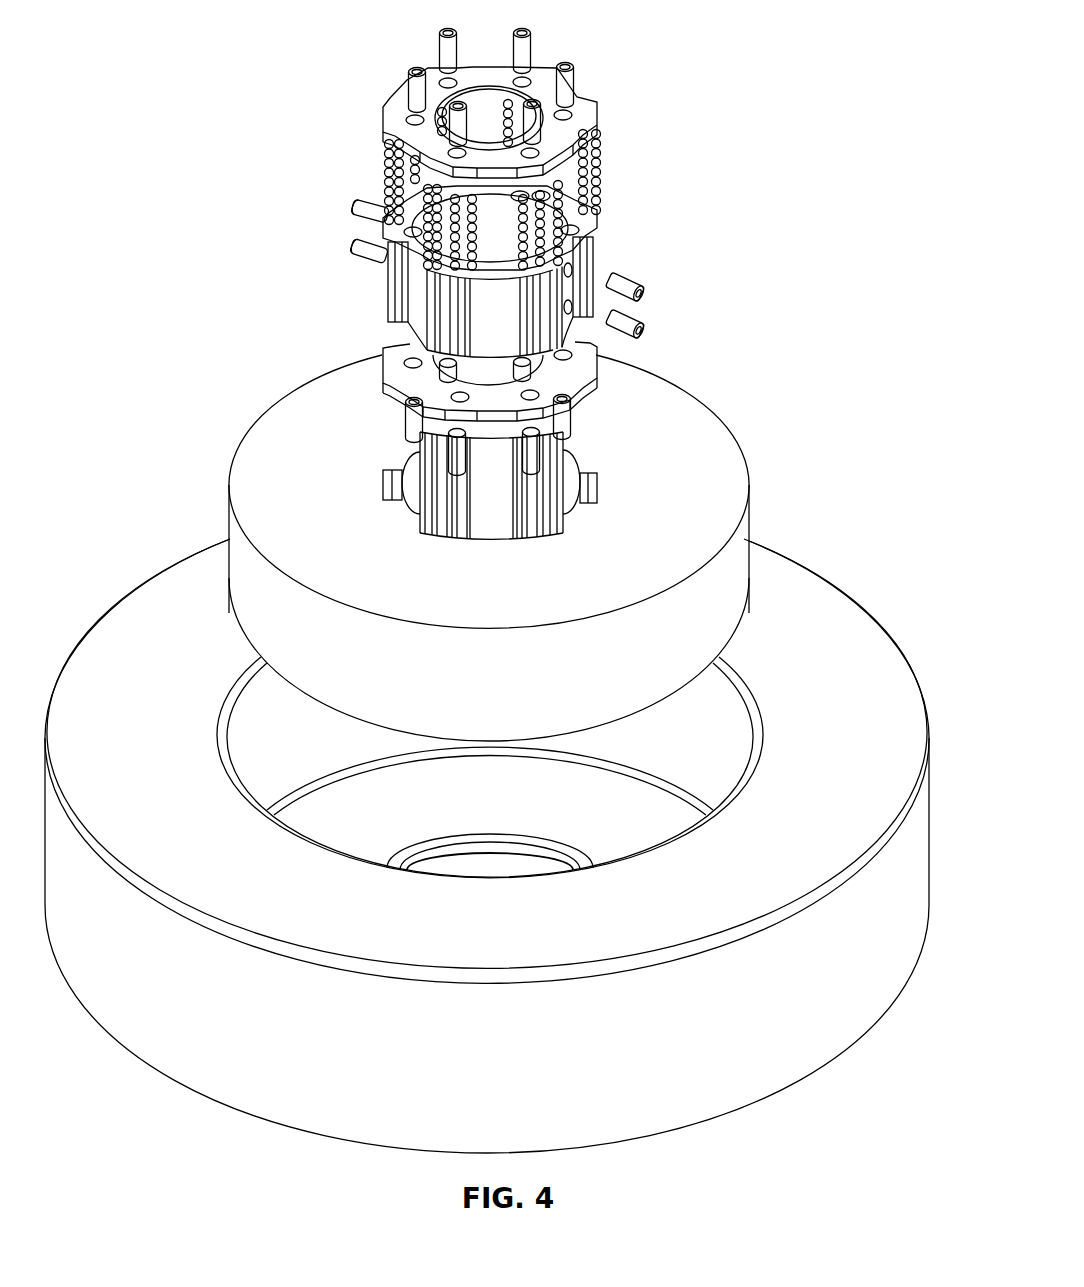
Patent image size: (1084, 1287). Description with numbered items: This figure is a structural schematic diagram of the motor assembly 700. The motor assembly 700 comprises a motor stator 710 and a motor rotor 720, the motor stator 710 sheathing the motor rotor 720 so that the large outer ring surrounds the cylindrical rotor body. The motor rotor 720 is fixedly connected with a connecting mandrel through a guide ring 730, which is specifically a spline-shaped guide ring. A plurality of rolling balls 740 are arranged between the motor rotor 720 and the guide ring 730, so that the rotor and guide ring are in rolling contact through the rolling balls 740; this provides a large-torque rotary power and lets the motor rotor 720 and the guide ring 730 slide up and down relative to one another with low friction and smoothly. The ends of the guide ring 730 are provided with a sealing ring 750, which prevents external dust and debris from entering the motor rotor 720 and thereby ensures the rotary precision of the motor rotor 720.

The motor assembly 700 is at (245, 135).
The motor stator 710 is at (833, 640).
The motor rotor 720 is at (705, 468).
The guide ring 730 is at (500, 305).
The rolling ball 740 is at (592, 172).
The sealing ring 750 is at (540, 87).